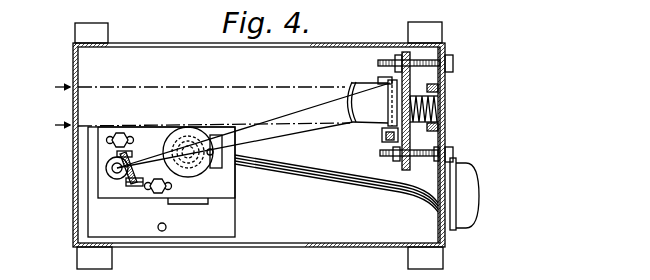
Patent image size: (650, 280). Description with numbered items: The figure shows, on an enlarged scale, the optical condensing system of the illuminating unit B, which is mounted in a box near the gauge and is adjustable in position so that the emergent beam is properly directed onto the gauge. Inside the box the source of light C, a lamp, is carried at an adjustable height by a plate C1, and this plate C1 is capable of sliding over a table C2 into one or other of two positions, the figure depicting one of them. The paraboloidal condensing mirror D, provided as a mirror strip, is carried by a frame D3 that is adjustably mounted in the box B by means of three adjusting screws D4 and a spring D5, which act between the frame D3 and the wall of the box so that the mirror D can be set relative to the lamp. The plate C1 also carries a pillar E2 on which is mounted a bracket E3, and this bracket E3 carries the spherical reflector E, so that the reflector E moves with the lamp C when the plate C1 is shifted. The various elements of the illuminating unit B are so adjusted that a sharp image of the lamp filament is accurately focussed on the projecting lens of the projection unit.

The illuminating unit B is at (160, 43).
The source of light C is at (193, 137).
The plate C1 is at (228, 176).
The table C2 is at (217, 219).
The paraboloidal condensing mirror D is at (348, 88).
The frame D3 is at (410, 81).
The adjusting screws D4 is at (430, 58).
The spring D5 is at (443, 108).
The spherical reflector E is at (118, 155).
The pillar E2 is at (117, 168).
The bracket E3 is at (134, 186).